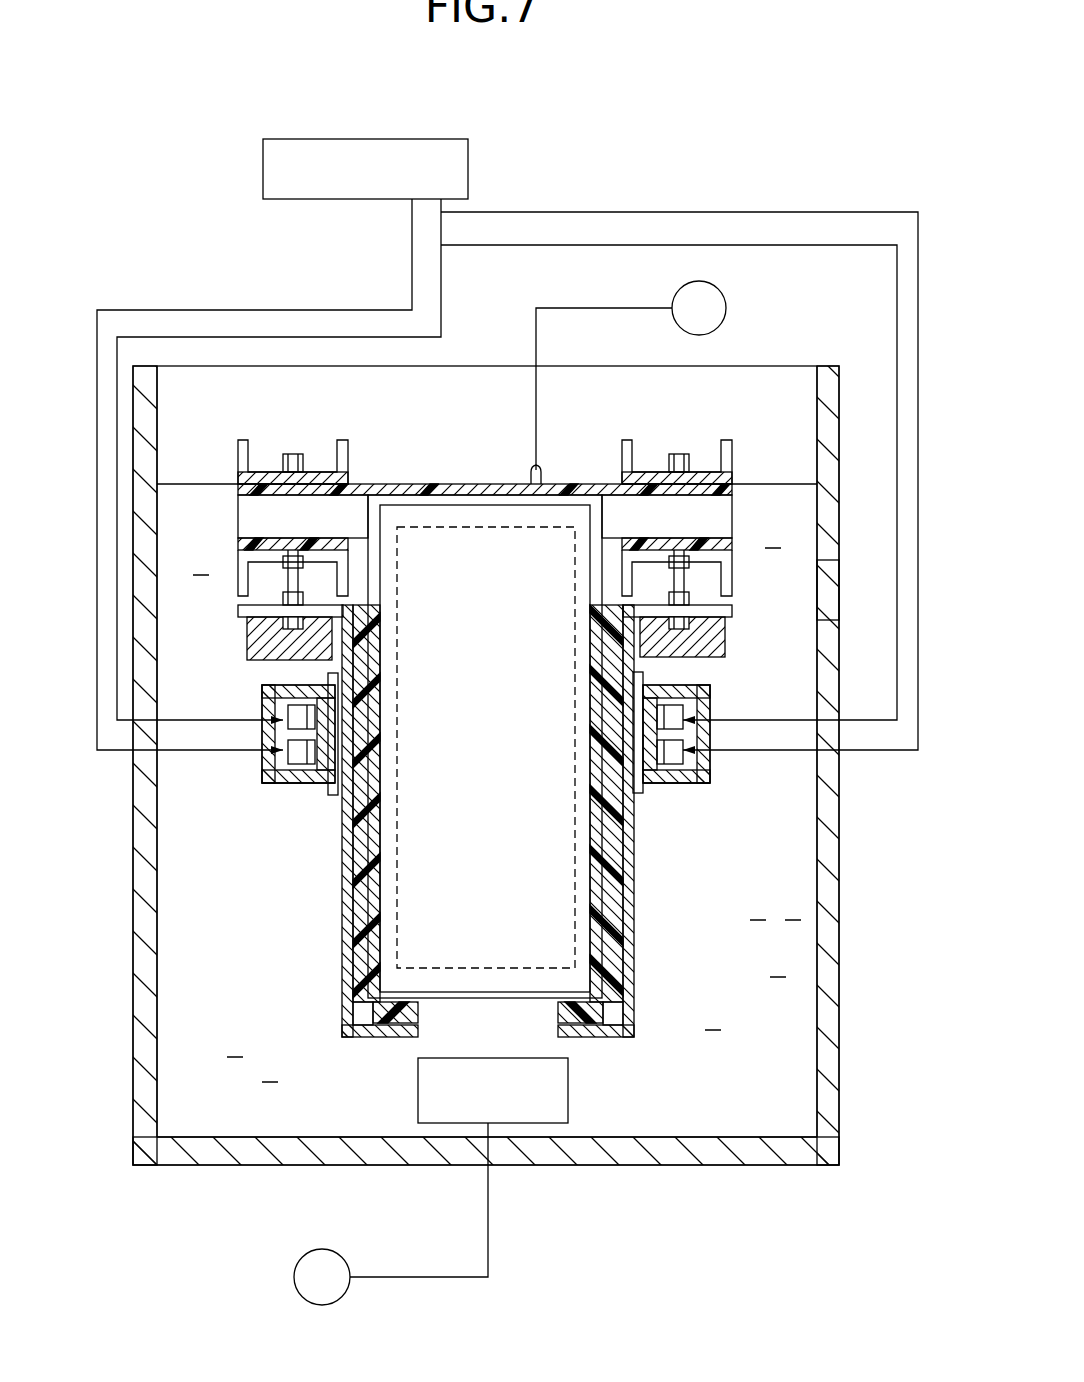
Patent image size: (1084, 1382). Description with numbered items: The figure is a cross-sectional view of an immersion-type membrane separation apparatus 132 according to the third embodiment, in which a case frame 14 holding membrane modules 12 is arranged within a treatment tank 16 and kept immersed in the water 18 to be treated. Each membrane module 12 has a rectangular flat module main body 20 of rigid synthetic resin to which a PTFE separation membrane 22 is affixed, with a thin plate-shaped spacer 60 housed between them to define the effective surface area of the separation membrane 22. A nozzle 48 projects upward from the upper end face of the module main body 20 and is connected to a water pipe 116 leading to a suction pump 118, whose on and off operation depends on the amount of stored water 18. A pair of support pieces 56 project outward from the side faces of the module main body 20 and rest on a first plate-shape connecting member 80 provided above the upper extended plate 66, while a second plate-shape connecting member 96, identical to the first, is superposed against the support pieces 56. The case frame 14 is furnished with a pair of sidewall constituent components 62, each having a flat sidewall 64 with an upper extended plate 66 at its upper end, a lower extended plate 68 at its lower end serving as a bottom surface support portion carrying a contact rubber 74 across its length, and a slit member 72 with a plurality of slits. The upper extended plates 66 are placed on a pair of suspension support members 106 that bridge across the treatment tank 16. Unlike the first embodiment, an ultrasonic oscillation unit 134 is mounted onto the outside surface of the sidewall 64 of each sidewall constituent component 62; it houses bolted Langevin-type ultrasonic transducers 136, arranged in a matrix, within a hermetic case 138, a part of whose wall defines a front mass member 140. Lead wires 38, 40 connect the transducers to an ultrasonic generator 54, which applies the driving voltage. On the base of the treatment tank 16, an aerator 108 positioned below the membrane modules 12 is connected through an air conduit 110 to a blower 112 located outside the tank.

The membrane module 12 is at (556, 482).
The case frame 14 is at (493, 849).
The treatment tank 16 is at (828, 590).
The water to be treated 18 is at (800, 640).
The module main body 20 is at (460, 498).
The separation membrane 22 is at (588, 942).
The lead wire 38 is at (412, 264).
The lead wire 40 is at (441, 282).
The nozzle 48 is at (532, 470).
The ultrasonic generator 54 is at (440, 140).
The support piece 56 is at (248, 514).
The spacer 60 is at (410, 914).
The sidewall constituent component 62 is at (337, 948).
The sidewall 64 is at (350, 868).
The upper extended plate 66 is at (246, 610).
The lower extended plate 68 is at (370, 1038).
The slit member 72 is at (362, 972).
The contact rubber 74 is at (408, 1012).
The first plate-shape connecting member 80 is at (237, 566).
The second plate-shape connecting member 96 is at (238, 438).
The suspension support member 106 is at (262, 658).
The aerator 108 is at (550, 1100).
The air conduit 110 is at (488, 1216).
The blower 112 is at (340, 1292).
The water pipe 116 is at (536, 318).
The suction pump 118 is at (724, 308).
The immersion-type membrane separation apparatus 132 is at (808, 358).
The ultrasonic oscillation unit 134 is at (262, 692).
The ultrasonic transducer 136 is at (270, 724).
The hermetic case 138 is at (312, 784).
The front mass member 140 is at (330, 780).